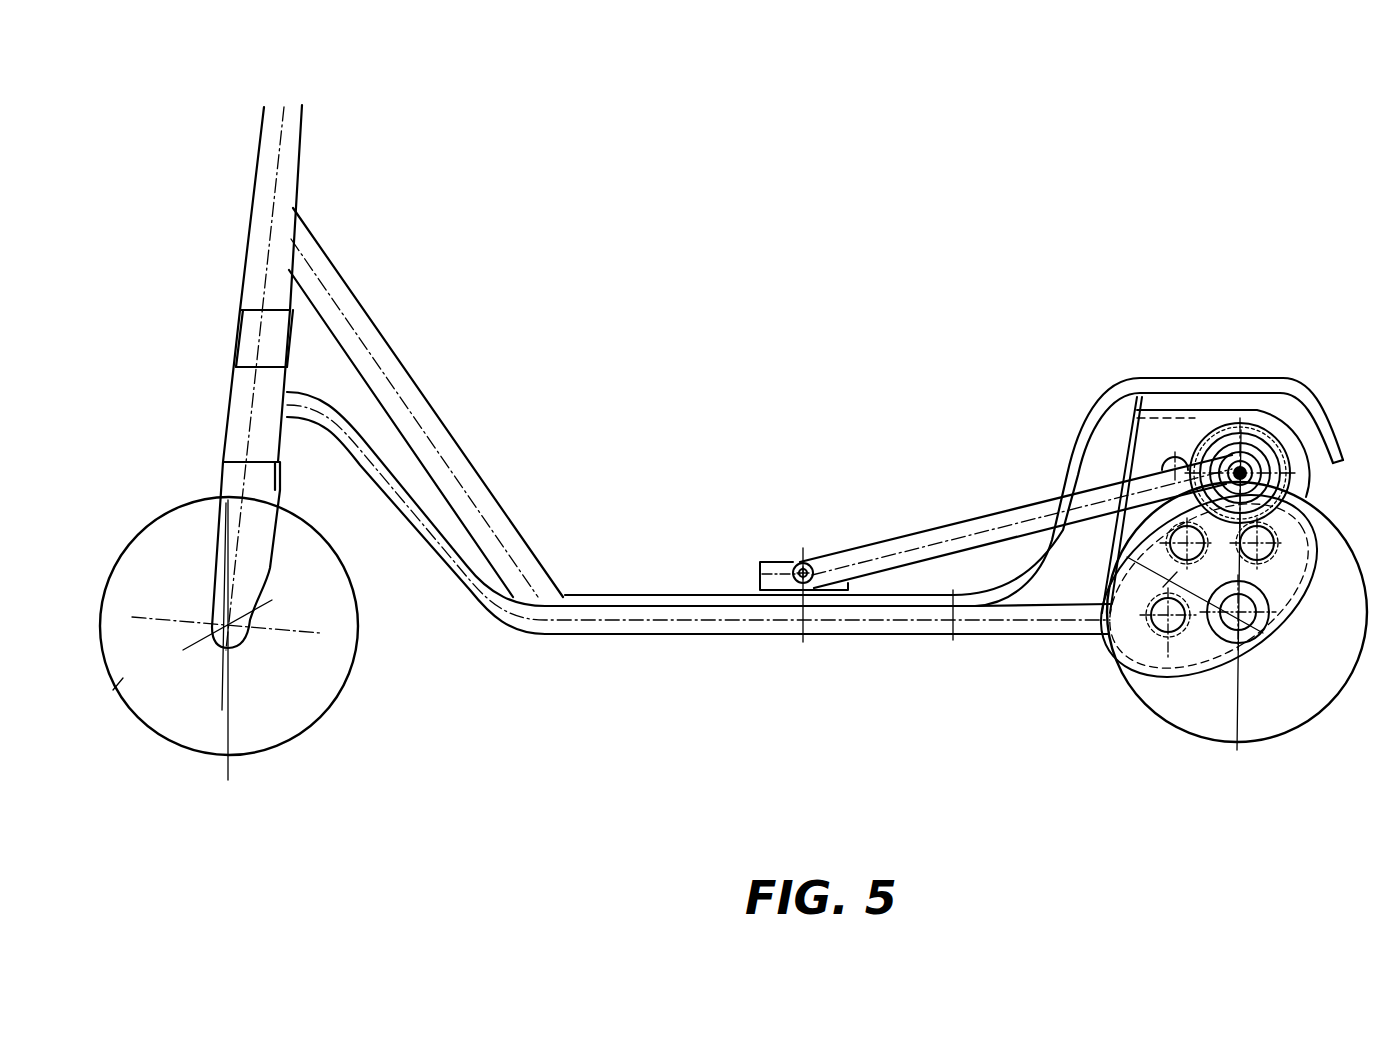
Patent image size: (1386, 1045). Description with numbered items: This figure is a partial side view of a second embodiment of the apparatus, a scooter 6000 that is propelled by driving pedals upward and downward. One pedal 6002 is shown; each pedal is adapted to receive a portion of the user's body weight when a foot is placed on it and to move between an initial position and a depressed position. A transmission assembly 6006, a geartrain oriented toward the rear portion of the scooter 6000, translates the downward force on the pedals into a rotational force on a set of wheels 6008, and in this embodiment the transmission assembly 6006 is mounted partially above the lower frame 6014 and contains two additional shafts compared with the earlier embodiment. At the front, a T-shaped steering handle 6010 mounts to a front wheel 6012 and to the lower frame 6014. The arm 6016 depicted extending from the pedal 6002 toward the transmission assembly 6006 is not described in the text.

The scooter 6000 is at (1146, 178).
The pedal 6002 is at (793, 548).
The transmission assembly 6006 is at (1236, 362).
The set of wheels 6008 is at (1103, 712).
The T-shaped steering handle 6010 is at (282, 160).
The front wheel 6012 is at (318, 688).
The lower frame 6014 is at (655, 623).
The pivot arm 6016 is at (948, 533).